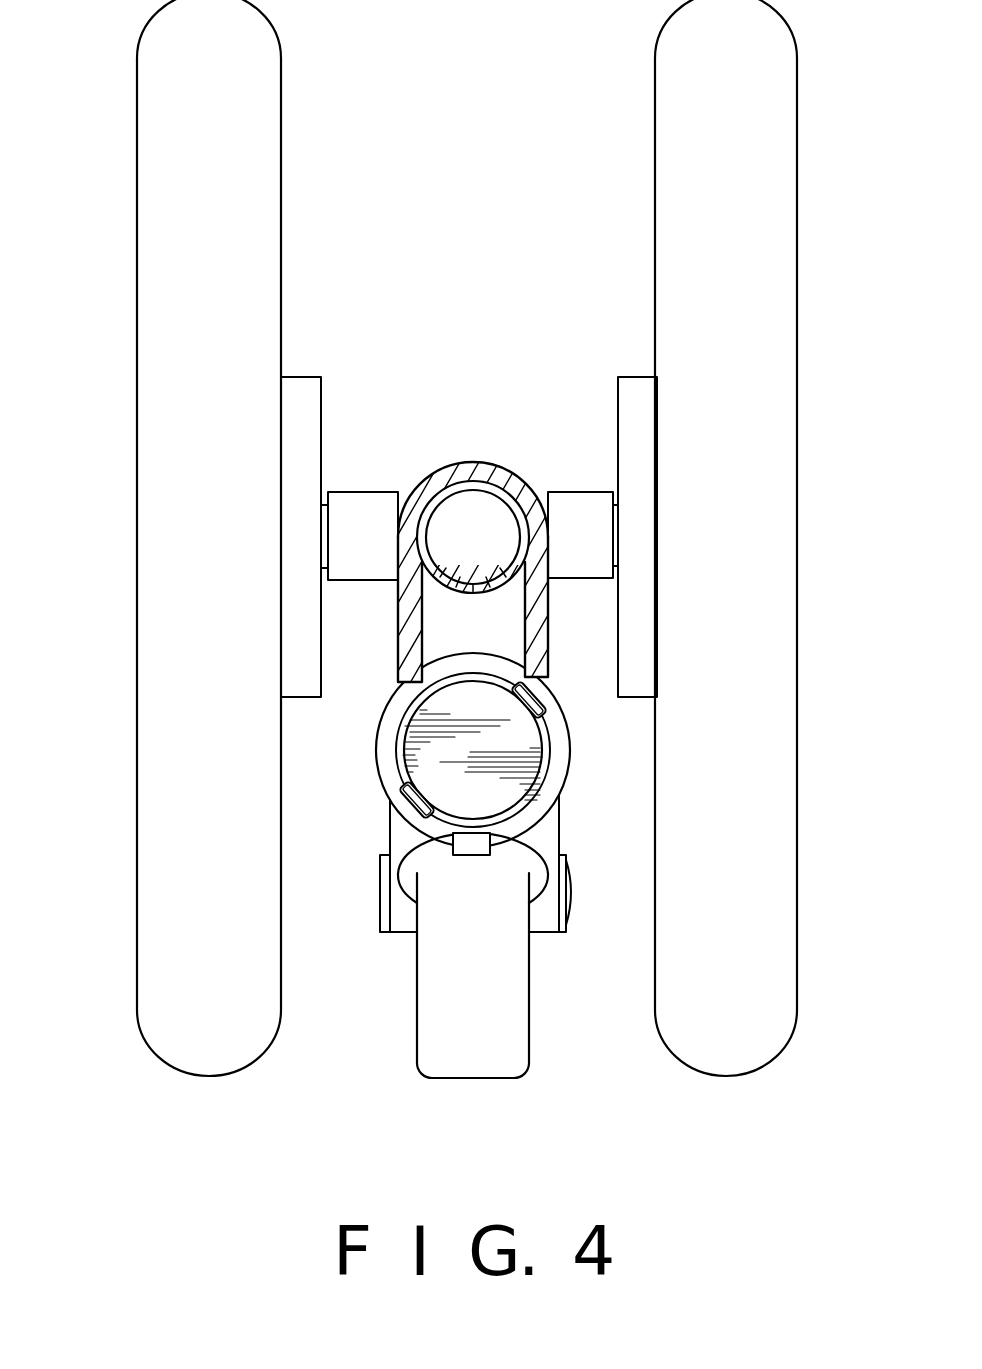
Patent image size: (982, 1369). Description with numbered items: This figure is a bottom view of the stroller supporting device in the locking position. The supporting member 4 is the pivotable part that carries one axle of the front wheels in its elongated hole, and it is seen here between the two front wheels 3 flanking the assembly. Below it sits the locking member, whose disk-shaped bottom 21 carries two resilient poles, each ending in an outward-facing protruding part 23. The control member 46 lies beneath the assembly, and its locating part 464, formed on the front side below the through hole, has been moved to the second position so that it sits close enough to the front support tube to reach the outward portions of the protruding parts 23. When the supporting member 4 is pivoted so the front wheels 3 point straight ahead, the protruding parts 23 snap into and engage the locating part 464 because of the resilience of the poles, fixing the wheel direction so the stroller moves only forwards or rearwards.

The wheel 3 is at (165, 633).
The supporting member 4 is at (476, 460).
The disk-shaped bottom 21 is at (500, 803).
The protruding part 23 is at (538, 698).
The control member 46 is at (452, 1063).
The locating part 464 is at (470, 847).